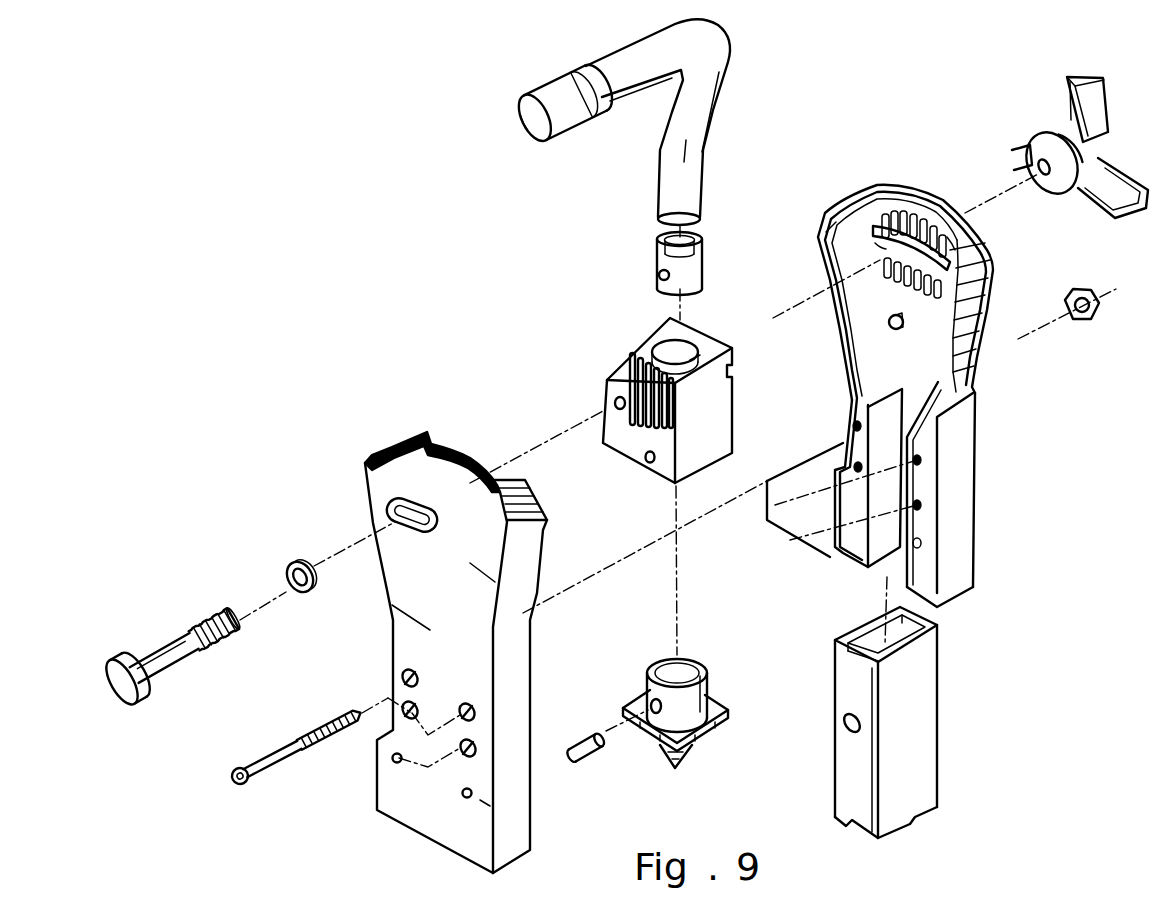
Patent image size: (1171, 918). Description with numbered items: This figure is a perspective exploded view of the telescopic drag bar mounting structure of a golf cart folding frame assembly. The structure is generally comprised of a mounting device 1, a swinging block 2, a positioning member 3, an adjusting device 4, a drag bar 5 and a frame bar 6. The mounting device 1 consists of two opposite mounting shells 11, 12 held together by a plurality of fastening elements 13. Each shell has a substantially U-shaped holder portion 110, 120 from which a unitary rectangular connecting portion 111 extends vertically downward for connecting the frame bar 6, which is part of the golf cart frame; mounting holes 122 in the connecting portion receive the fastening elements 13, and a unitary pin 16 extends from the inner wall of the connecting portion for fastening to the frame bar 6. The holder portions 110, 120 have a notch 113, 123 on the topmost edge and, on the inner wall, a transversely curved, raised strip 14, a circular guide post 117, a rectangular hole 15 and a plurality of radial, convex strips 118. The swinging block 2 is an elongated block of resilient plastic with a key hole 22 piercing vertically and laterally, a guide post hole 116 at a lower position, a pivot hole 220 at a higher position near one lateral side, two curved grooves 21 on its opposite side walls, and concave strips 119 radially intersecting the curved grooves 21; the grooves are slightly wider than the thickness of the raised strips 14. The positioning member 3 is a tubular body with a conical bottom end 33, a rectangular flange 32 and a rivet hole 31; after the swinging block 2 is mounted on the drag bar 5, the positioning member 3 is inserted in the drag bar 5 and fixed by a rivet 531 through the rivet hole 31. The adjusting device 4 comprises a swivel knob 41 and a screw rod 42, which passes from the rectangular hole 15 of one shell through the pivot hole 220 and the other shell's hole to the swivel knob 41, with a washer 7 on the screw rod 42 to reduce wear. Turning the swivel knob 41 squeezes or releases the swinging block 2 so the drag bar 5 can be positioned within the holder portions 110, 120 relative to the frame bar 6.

The mounting device 1 is at (903, 375).
The swinging block 2 is at (667, 405).
The positioning member 3 is at (662, 711).
The adjusting device 4 is at (1081, 166).
The drag bar 5 is at (625, 162).
The frame bar 6 is at (932, 700).
The washer 7 is at (300, 562).
The mounting shell 11 is at (978, 426).
The mounting shell 12 is at (443, 635).
The fastening elements 13 is at (300, 735).
The transversely curved, raised strip 14 is at (958, 252).
The rectangular hole 15 is at (876, 250).
The pin 16 is at (920, 470).
The curved grooves 21 is at (609, 393).
The key hole 22 is at (693, 340).
The rivet hole 31 is at (647, 690).
The rectangular flange 32 is at (718, 722).
The conical bottom end 33 is at (670, 755).
The swivel knob 41 is at (1110, 103).
The screw rod 42 is at (168, 645).
The holder portion 110 is at (988, 290).
The connecting portion 111 is at (972, 522).
The notch 113 is at (861, 206).
The guide post hole 116 is at (652, 464).
The circular guide post 117 is at (889, 328).
The radial, convex strips 118 is at (898, 222).
The concave strips 119 is at (668, 410).
The holder portion 120 is at (372, 458).
The mounting holes 122 is at (515, 757).
The notch 123 is at (457, 452).
The pivot hole 220 is at (620, 412).
The rivet 531 is at (657, 278).